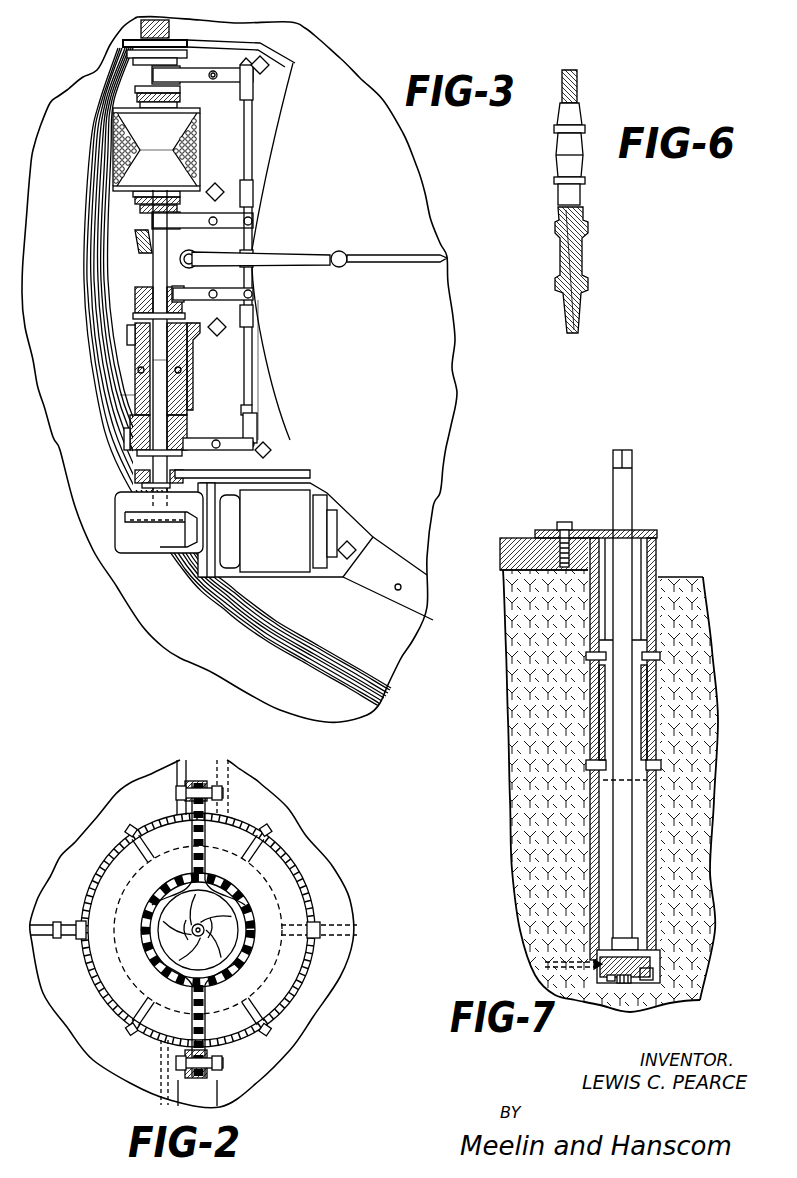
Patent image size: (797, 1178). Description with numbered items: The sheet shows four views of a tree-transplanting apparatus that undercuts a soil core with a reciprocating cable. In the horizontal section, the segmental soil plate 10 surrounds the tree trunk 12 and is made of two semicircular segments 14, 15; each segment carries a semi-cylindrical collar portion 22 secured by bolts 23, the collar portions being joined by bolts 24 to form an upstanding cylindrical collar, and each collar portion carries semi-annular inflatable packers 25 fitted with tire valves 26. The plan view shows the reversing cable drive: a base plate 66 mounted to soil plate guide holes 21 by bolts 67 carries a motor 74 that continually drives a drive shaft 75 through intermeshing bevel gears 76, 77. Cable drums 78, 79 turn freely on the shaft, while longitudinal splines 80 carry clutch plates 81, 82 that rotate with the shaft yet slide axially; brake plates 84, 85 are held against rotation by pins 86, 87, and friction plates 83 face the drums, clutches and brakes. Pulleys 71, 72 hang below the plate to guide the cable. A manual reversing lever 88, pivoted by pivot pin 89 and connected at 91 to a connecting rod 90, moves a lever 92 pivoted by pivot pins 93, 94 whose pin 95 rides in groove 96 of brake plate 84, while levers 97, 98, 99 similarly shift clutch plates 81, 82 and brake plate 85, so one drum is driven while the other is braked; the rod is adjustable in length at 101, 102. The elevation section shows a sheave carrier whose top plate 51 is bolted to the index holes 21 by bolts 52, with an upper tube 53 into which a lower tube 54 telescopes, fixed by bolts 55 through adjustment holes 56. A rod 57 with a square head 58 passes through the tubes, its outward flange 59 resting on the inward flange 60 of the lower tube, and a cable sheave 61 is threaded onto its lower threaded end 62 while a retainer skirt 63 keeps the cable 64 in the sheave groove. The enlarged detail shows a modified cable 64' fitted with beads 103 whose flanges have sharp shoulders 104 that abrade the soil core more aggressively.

In FIG. 3, the segmental soil plate 10 is at (355, 76).
In FIG. 2, the tree trunk 12 is at (233, 940).
In FIG. 2, the semicircular segment 14 is at (108, 1060).
In FIG. 2, the semicircular segment 15 is at (337, 973).
In FIG. 3, the index or guide holes 21 is at (400, 584).
In FIG. 2, the semi-cylindrical collar portion 22 is at (103, 868).
In FIG. 2, the bolts 23 is at (263, 1031).
In FIG. 2, the bolts 24 is at (178, 793).
In FIG. 2, the semi-annular inflatable packers 25 is at (254, 904).
In FIG. 2, the tire valves 26 is at (71, 924).
In FIG. 7, the top plate 51 is at (597, 530).
In FIG. 7, the bolts 52 is at (572, 511).
In FIG. 7, the upper tube 53 is at (656, 570).
In FIG. 7, the lower tube 54 is at (604, 656).
In FIG. 7, the bolts 55 is at (658, 661).
In FIG. 7, the adjustment holes 56 is at (603, 690).
In FIG. 7, the rod 57 is at (632, 556).
In FIG. 7, the square head 58 is at (630, 455).
In FIG. 7, the outwardly extending flange 59 is at (632, 943).
In FIG. 7, the inwardly extending flange 60 is at (650, 950).
In FIG. 7, the cable sheave 61 is at (611, 985).
In FIG. 7, the lower threaded end 62 is at (632, 988).
In FIG. 7, the retainer skirt 63 is at (660, 975).
In FIG. 3, the cable 64 is at (127, 149).
In FIG. 7, the cable 64 is at (625, 964).
In FIG. 6, the modified cable 64' is at (597, 271).
In FIG. 3, the base plate 66 is at (235, 380).
In FIG. 3, the bolts 67 is at (272, 448).
In FIG. 3, the pulley 71 is at (135, 286).
In FIG. 3, the pulley 72 is at (140, 238).
In FIG. 3, the motor 74 is at (306, 500).
In FIG. 3, the drive shaft 75 is at (158, 378).
In FIG. 3, the bevel gear 76 is at (175, 545).
In FIG. 3, the bevel gear 77 is at (150, 522).
In FIG. 3, the cable drum 78 is at (120, 407).
In FIG. 3, the cable drum 79 is at (140, 178).
In FIG. 3, the longitudinal splines 80 is at (150, 258).
In FIG. 3, the clutch plate 81 is at (173, 293).
In FIG. 3, the clutch plate 82 is at (140, 218).
In FIG. 3, the friction plates 83 is at (138, 92).
In FIG. 3, the brake plate 84 is at (138, 435).
In FIG. 3, the brake plate 85 is at (140, 75).
In FIG. 3, the pin 86 is at (135, 482).
In FIG. 3, the pin 87 is at (125, 52).
In FIG. 3, the reversing lever 88 is at (318, 266).
In FIG. 3, the pivot pin 89 is at (189, 253).
In FIG. 3, the connecting rod 90 is at (253, 315).
In FIG. 3, the pivotal connection 91 is at (249, 254).
In FIG. 3, the lever 92 is at (238, 440).
In FIG. 3, the pivot pin 93 is at (250, 448).
In FIG. 3, the pivot pin 94 is at (218, 450).
In FIG. 3, the pin 95 is at (124, 458).
In FIG. 3, the groove 96 is at (185, 410).
In FIG. 3, the lever 97 is at (235, 293).
In FIG. 3, the lever 98 is at (250, 182).
In FIG. 3, the lever 99 is at (227, 78).
In FIG. 3, the length adjustment 101 is at (255, 412).
In FIG. 3, the length adjustment 102 is at (250, 112).
In FIG. 6, the beads 103 is at (581, 194).
In FIG. 6, the sharp shoulders 104 is at (585, 241).